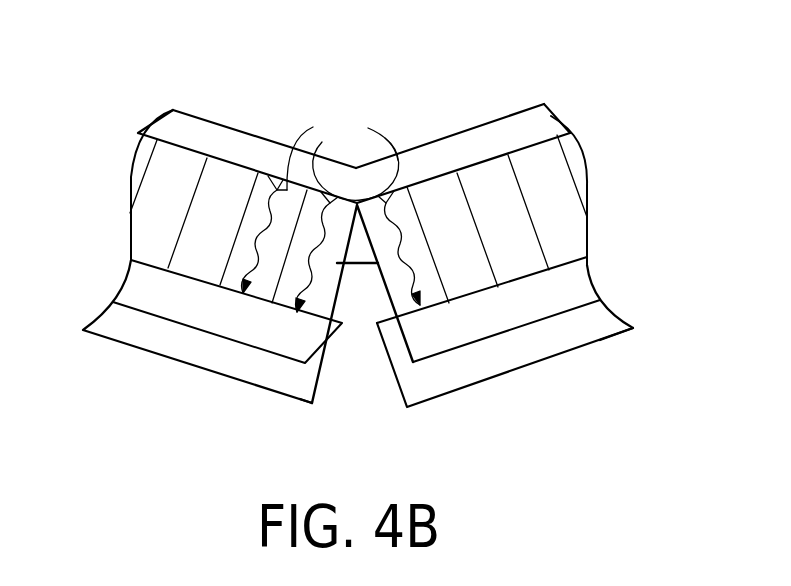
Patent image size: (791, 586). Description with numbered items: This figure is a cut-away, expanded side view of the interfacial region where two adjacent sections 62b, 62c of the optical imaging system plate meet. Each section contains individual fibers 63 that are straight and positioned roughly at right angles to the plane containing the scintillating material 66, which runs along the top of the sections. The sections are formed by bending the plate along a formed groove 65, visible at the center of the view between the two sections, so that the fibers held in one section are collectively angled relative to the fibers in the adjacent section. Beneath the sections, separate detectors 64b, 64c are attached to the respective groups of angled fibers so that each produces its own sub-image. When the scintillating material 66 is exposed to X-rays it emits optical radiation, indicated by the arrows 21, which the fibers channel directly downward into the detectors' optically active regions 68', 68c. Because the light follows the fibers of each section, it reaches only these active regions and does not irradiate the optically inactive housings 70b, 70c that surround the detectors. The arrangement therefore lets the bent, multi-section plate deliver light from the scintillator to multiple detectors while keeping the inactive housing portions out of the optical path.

The section 62b is at (250, 113).
The section 62c is at (482, 110).
The scintillating material 66 is at (557, 113).
The individual fibers 63 is at (553, 190).
The optically active region 68' is at (201, 290).
The optically active region 68c is at (583, 282).
The optical radiation 21 is at (331, 207).
The formed groove 65 is at (355, 290).
The detector 64b is at (202, 382).
The detector 64c is at (538, 385).
The optically inactive housing 70b is at (313, 403).
The optically inactive housing 70c is at (583, 335).